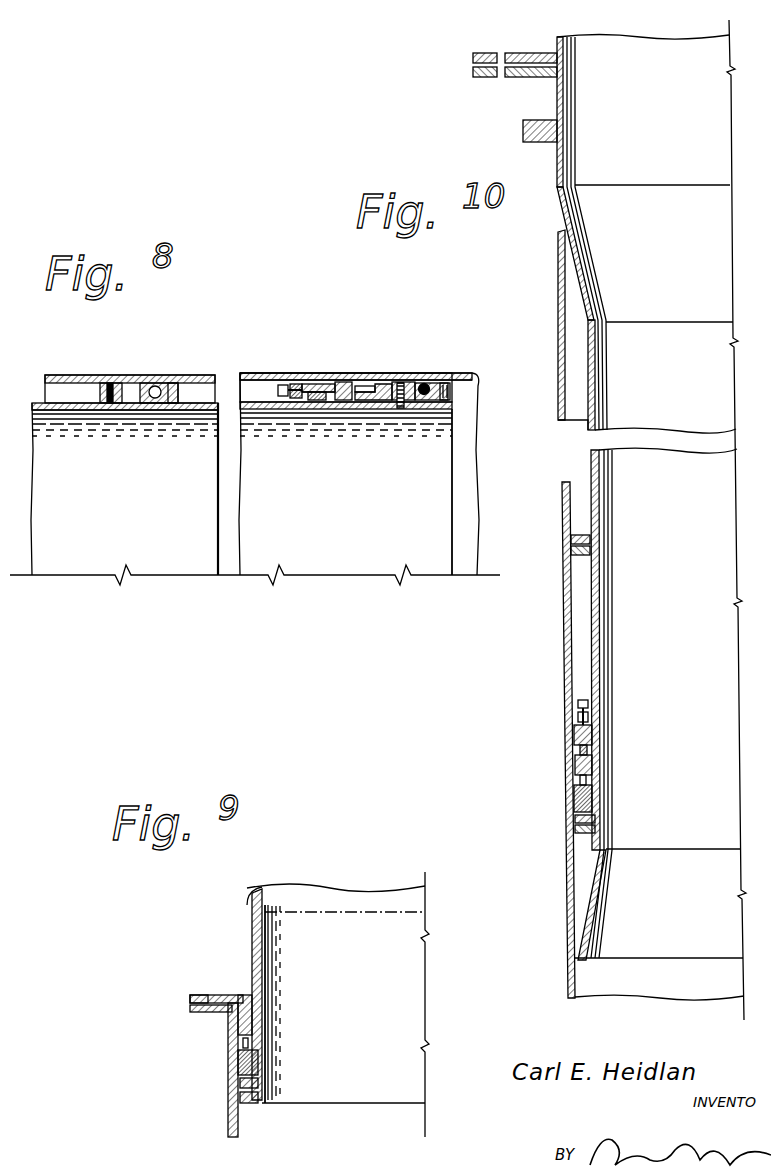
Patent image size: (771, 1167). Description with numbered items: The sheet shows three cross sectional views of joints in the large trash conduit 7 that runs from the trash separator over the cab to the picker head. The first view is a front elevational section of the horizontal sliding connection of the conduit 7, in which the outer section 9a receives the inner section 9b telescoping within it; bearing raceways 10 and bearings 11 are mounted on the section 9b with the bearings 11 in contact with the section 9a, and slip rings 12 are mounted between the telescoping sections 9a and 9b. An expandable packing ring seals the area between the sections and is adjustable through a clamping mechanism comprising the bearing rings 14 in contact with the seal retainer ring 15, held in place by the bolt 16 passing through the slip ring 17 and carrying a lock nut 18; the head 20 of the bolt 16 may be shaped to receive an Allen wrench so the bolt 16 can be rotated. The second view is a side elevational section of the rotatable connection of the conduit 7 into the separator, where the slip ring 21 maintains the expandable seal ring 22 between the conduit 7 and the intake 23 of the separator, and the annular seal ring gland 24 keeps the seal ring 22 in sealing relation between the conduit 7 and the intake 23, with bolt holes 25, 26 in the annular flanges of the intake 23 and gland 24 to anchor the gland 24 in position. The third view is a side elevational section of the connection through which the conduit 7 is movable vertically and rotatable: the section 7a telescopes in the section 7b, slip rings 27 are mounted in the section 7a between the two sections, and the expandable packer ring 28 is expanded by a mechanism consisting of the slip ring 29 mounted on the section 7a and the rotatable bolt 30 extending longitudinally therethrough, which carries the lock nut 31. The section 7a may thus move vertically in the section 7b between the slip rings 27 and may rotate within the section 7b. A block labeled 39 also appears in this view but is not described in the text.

In FIG. 8, the conduit 7 is at (352, 578).
In FIG. 9, the conduit 7 is at (264, 930).
In FIG. 10, the conduit 7 is at (596, 292).
In FIG. 10, the section 7a is at (573, 330).
In FIG. 10, the section 7b is at (568, 978).
In FIG. 8, the outer section 9a is at (306, 392).
In FIG. 8, the section 9b is at (142, 404).
In FIG. 8, the bearing raceways 10 is at (176, 392).
In FIG. 8, the bearings 11 is at (155, 386).
In FIG. 8, the slip rings 12 is at (114, 380).
In FIG. 8, the bearing rings 14 is at (345, 384).
In FIG. 8, the seal retainer ring 15 is at (370, 390).
In FIG. 8, the bolt 16 is at (383, 398).
In FIG. 8, the slip ring 17 is at (318, 393).
In FIG. 8, the lock nut 18 is at (304, 397).
In FIG. 8, the head 20 is at (283, 386).
In FIG. 9, the slip ring 21 is at (250, 1105).
In FIG. 9, the expandable seal ring 22 is at (242, 1063).
In FIG. 9, the intake 23 is at (228, 1124).
In FIG. 9, the annular seal ring gland 24 is at (190, 998).
In FIG. 9, the bolt holes 25 is at (210, 995).
In FIG. 9, the bolt holes 26 is at (192, 1010).
In FIG. 10, the slip rings 27 is at (583, 558).
In FIG. 10, the expandable packer ring 28 is at (575, 796).
In FIG. 10, the slip ring 29 is at (575, 735).
In FIG. 10, the rotatable bolt 30 is at (578, 718).
In FIG. 10, the lock nut 31 is at (578, 703).
In FIG. 10, the mounting block 39 is at (523, 130).